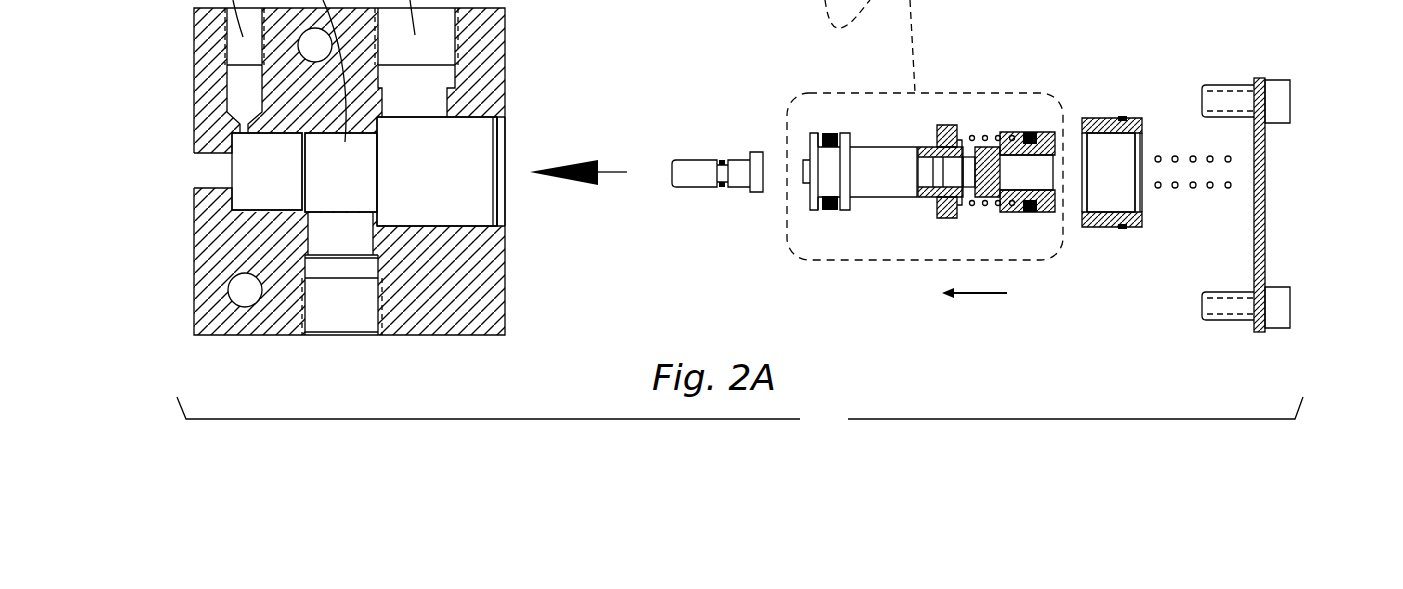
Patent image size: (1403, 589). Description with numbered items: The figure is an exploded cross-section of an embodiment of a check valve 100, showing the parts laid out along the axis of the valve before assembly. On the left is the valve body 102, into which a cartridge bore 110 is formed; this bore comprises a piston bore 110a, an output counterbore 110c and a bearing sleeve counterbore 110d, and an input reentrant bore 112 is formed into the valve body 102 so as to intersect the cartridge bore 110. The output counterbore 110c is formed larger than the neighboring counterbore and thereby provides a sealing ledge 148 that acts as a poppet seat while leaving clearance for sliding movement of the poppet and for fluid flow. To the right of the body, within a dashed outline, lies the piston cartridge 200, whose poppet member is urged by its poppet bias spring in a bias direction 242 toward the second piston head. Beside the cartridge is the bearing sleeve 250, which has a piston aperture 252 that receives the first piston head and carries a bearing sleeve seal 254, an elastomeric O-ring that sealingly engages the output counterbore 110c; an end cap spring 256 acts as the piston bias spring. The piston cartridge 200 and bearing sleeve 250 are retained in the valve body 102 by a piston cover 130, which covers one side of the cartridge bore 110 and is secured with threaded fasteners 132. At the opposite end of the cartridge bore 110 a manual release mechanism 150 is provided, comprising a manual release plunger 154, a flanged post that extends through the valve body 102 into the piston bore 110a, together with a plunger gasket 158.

The valve 100 is at (740, 413).
The valve body 102 is at (277, 292).
The cartridge bore 110 is at (474, 186).
The piston bore 110a is at (250, 167).
The output counterbore 110c is at (444, 170).
The bearing sleeve counterbore 110d is at (503, 117).
The input reentrant bore 112 is at (486, 192).
The sealing ledge 148 is at (380, 218).
The manual release mechanism 150 is at (710, 176).
The manual release plunger 154 is at (673, 163).
The plunger gasket 158 is at (721, 160).
The piston cartridge 200 is at (908, 226).
The bias direction 242 is at (968, 295).
The bearing sleeve 250 is at (1092, 228).
The piston aperture 252 is at (1097, 193).
The bearing sleeve seal 254 is at (1123, 229).
The end cap spring 256 is at (1176, 192).
The piston cover 130 is at (1268, 199).
The threaded fasteners 132 is at (1324, 266).